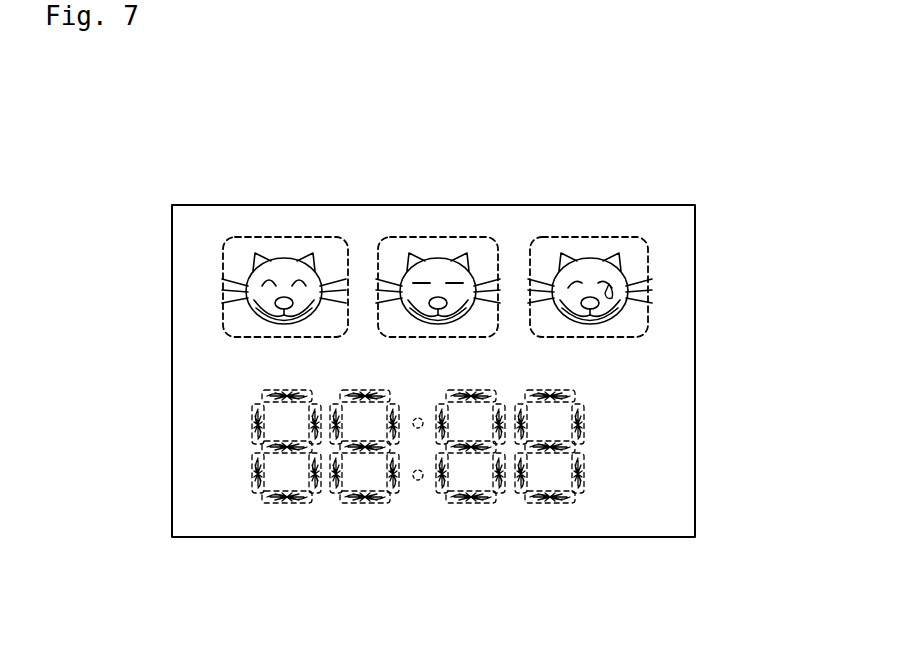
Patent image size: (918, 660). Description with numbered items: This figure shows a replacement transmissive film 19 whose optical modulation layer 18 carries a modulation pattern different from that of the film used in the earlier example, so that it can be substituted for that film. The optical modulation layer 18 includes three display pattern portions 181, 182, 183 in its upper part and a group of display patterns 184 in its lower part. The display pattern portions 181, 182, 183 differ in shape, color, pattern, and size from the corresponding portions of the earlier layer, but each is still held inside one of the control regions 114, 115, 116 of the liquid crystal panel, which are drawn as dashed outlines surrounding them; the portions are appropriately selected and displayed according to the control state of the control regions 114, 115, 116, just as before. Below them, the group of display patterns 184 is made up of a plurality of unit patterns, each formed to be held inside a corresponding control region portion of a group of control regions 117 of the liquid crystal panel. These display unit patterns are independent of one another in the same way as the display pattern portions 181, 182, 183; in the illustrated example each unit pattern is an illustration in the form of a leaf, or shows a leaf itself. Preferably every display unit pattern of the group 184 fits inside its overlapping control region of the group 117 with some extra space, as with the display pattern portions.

The optical modulation layer 18 is at (228, 360).
The transmissive film 19 is at (695, 370).
The control region 114 is at (222, 262).
The control region 115 is at (378, 262).
The control region 116 is at (655, 262).
The group of control regions 117 is at (584, 480).
The display pattern portion 181 is at (283, 257).
The display pattern portion 182 is at (438, 260).
The display pattern portion 183 is at (578, 255).
The group of display patterns 184 is at (444, 505).